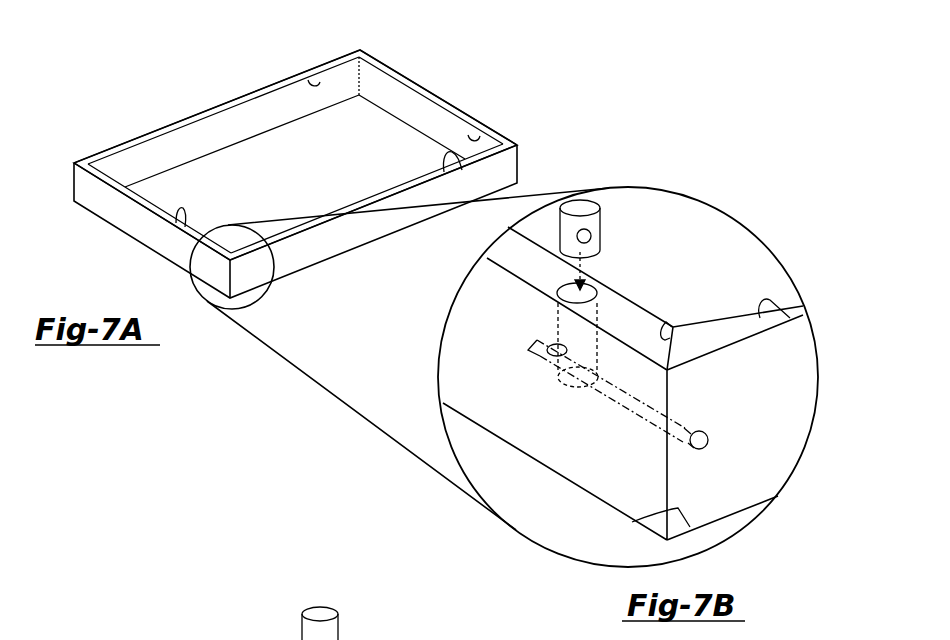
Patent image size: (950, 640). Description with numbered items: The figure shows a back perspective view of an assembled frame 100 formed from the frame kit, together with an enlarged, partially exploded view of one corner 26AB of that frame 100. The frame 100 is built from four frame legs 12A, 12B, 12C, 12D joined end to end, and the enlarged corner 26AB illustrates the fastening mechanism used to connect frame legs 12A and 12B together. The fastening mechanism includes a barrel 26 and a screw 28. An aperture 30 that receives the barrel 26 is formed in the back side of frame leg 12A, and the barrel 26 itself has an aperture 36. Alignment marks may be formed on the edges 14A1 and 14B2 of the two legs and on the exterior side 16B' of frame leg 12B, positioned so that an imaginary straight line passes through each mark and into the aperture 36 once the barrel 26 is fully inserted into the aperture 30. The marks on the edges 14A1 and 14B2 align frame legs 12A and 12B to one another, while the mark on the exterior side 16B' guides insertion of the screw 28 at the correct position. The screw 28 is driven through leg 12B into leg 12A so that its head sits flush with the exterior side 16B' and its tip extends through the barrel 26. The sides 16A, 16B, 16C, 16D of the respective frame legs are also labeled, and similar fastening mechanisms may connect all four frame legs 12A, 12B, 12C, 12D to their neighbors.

In FIG. 7A, the frame 100 is at (138, 40).
In FIG. 7A, the frame leg 12A is at (143, 203).
In FIG. 7B, the frame leg 12A is at (552, 450).
In FIG. 7A, the frame leg 12B is at (382, 197).
In FIG. 7B, the frame leg 12B is at (788, 397).
In FIG. 7A, the frame leg 12C is at (428, 93).
In FIG. 7A, the frame leg 12D is at (258, 85).
In FIG. 7A, the first connector tab 16A is at (180, 220).
In FIG. 7A, the second connector tab 16B is at (514, 170).
In FIG. 7B, the second connector tab 16B is at (810, 305).
In FIG. 7B, the exterior side 16B' is at (613, 534).
In FIG. 7A, the third connector tab 16C is at (470, 136).
In FIG. 7A, the fourth connector tab 16D is at (312, 85).
In FIG. 7A, the corner 26AB is at (208, 320).
In FIG. 7B, the corner 26AB is at (556, 528).
In FIG. 7B, the barrel 26 is at (567, 230).
In FIG. 7B, the screw 28 is at (708, 442).
In FIG. 7B, the aperture 30 is at (592, 287).
In FIG. 7B, the aperture 36 is at (590, 238).
In FIG. 7B, the edge 14A1 is at (675, 508).
In FIG. 7B, the edge 14B2 is at (667, 324).